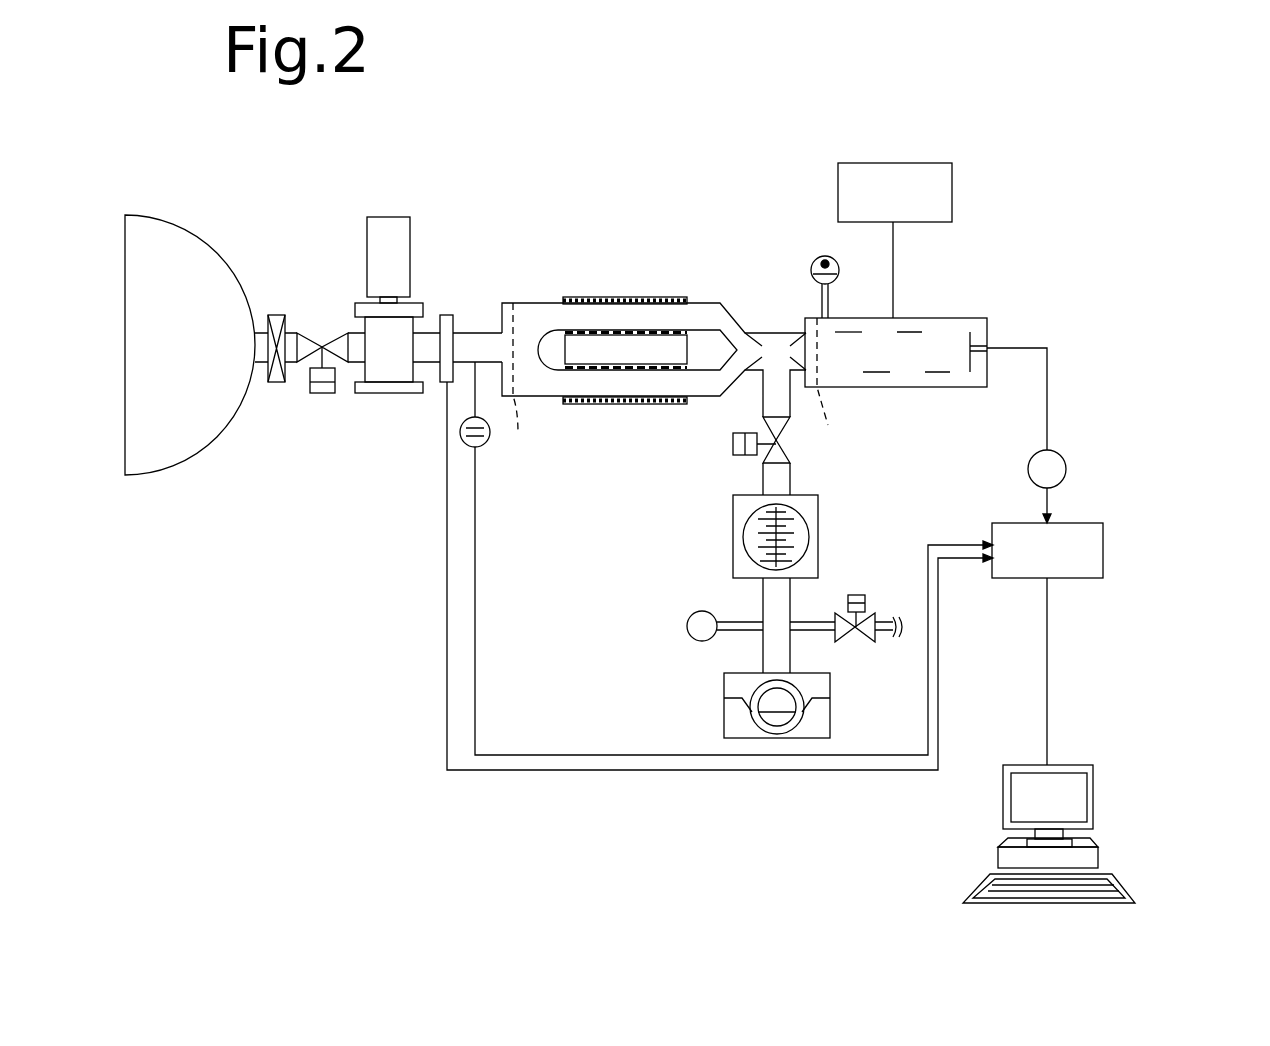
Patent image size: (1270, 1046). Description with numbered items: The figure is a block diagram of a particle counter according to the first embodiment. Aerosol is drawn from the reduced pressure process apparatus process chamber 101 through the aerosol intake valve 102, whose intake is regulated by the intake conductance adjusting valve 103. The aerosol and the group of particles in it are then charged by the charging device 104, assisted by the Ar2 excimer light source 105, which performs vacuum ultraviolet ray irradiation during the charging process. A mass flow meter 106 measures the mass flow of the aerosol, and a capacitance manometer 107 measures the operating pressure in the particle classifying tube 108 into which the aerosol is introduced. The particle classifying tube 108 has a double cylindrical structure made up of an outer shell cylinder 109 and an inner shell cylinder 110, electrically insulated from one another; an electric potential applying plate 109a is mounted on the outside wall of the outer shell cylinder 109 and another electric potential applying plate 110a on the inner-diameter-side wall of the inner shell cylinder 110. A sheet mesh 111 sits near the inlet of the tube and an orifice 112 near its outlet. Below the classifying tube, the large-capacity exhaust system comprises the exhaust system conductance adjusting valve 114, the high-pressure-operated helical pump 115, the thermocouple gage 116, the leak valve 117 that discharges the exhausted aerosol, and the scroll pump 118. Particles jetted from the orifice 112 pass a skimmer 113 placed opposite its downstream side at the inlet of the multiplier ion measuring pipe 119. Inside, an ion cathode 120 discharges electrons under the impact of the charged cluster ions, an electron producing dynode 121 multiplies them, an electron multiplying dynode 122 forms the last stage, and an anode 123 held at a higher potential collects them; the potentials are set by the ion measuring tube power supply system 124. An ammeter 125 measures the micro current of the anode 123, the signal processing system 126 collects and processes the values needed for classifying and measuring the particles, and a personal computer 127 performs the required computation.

The reduced pressure process apparatus process chamber 101 is at (168, 470).
The aerosol intake valve 102 is at (275, 383).
The intake conductance adjusting valve 103 is at (322, 393).
The charging device 104 is at (388, 395).
The Ar2 excimer light source 105 is at (390, 217).
The mass flow meter 106 is at (447, 315).
The capacitance manometer 107 is at (490, 438).
The particle classifying tube 108 is at (663, 357).
The outer shell cylinder 109 is at (531, 303).
The electric potential applying plate 109a is at (655, 297).
The inner shell cylinder 110 is at (578, 318).
The electric potential applying plate 110a is at (670, 326).
The sheet mesh 111 is at (530, 383).
The orifice 112 is at (765, 333).
The skimmer 113 is at (785, 333).
The exhaust system conductance adjusting valve 114 is at (733, 444).
The high-pressure-operated helical pump 115 is at (733, 540).
The thermocouple gage 116 is at (687, 626).
The leak valve 117 is at (856, 595).
The scroll pump 118 is at (724, 713).
The multiplier ion measuring pipe 119 is at (918, 357).
The ion cathode 120 is at (838, 388).
The electron producing dynode 121 is at (855, 332).
The electron multiplying dynode 122 is at (942, 372).
The anode 123 is at (1000, 318).
The ion measuring tube power supply system 124 is at (880, 163).
The ammeter 125 is at (1067, 469).
The signal processing system 126 is at (1103, 550).
The personal computer 127 is at (1093, 790).